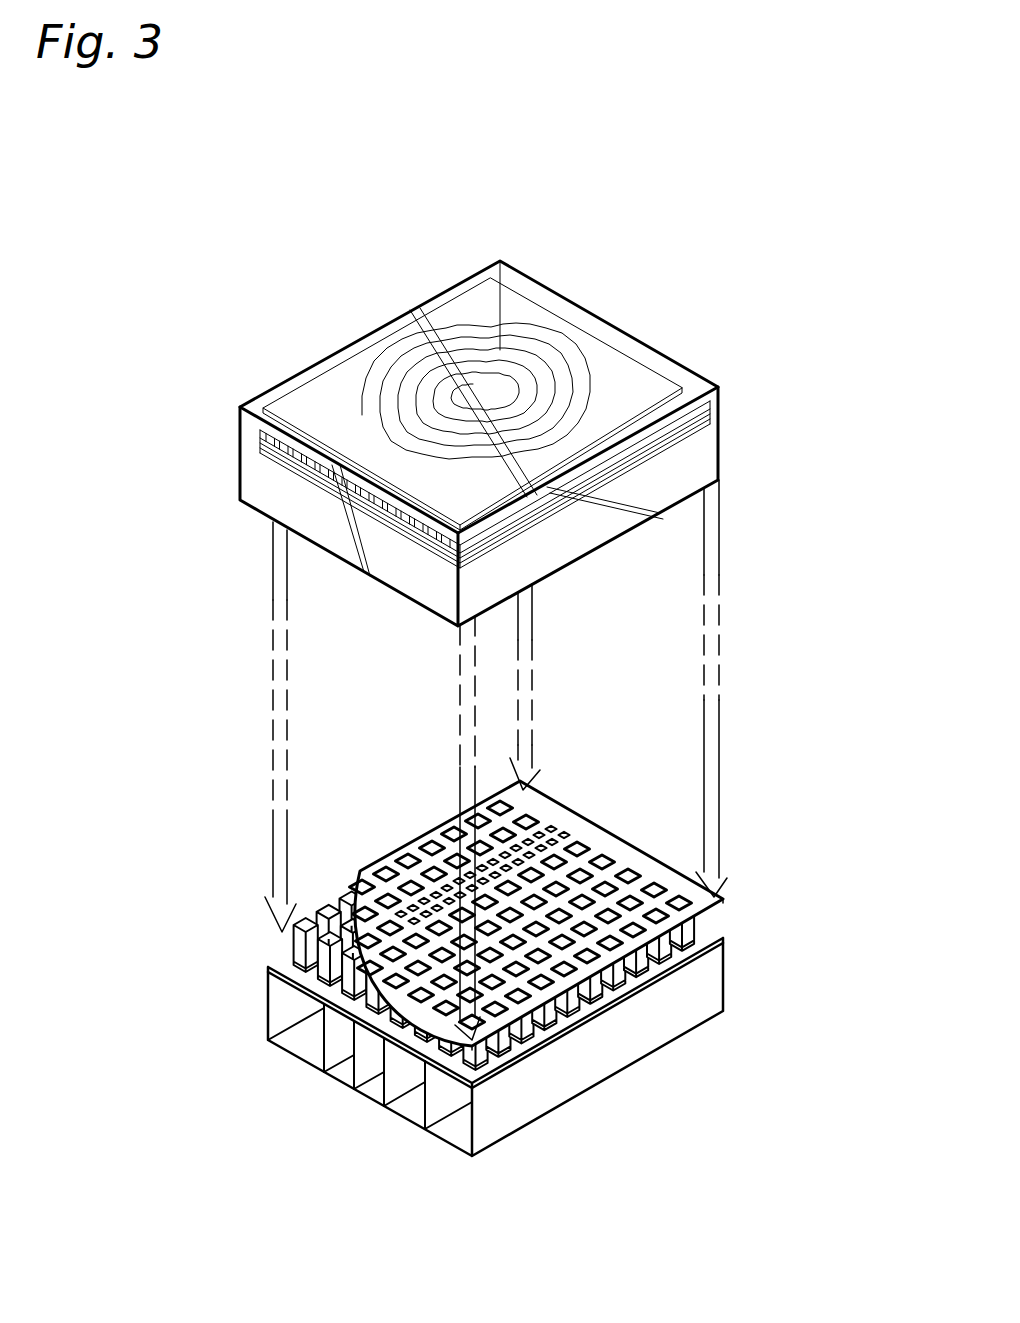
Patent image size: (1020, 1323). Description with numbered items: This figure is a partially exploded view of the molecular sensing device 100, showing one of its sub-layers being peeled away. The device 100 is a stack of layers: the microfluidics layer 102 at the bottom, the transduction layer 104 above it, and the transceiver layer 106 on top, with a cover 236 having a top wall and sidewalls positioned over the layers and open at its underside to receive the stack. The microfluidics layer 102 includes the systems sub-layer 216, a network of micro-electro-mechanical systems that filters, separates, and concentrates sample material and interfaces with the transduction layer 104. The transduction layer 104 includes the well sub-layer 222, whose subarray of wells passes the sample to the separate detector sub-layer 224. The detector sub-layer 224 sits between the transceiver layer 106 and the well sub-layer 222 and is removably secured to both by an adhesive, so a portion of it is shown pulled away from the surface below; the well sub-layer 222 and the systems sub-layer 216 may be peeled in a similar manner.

The molecular sensing device 100 is at (510, 671).
The transceiver layer 106 is at (456, 443).
The cover 236 is at (258, 468).
The transduction layer 104 is at (593, 859).
The detector sub-layer 224 is at (402, 883).
The well sub-layer 222 is at (693, 948).
The systems sub-layer 216 is at (733, 1020).
The microfluidics layer 102 is at (537, 1035).